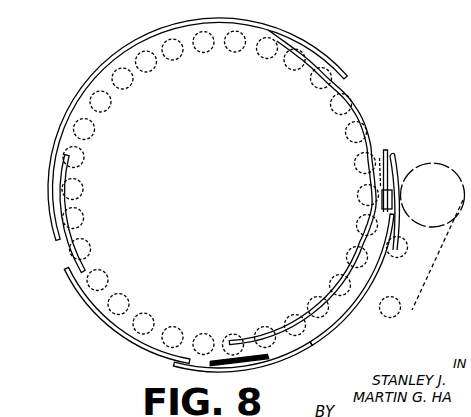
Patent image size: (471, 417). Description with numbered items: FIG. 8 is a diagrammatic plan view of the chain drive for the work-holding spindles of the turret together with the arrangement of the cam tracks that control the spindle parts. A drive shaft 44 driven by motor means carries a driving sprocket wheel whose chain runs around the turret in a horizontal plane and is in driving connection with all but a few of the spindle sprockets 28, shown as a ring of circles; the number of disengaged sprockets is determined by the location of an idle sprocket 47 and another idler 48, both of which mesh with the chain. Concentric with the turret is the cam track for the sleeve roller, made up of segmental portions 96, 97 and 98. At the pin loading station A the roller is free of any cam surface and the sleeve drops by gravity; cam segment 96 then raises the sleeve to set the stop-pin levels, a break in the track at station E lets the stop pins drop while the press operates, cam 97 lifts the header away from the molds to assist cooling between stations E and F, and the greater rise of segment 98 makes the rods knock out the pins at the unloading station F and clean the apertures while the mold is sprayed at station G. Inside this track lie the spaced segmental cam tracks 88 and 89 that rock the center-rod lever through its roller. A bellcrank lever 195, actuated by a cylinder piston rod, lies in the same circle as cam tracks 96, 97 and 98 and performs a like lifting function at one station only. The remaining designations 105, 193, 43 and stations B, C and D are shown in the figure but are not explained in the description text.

The cam segment 96 is at (108, 56).
The segmental cam track 88 is at (66, 243).
The cam segment 97 is at (157, 355).
The cam segment 98 is at (274, 364).
The right outer guide rail 105 is at (374, 338).
The segmental cam track 89 is at (349, 272).
The spindle sprockets 28 is at (340, 112).
The bellcrank lever 195 is at (385, 152).
The pivoted gate arm 193 is at (394, 182).
The feed wheel 43 is at (444, 225).
The drive shaft 44 is at (436, 262).
The idler 48 is at (423, 260).
The idle sprocket 47 is at (402, 299).
The ball B is at (355, 163).
The ball C is at (81, 190).
The ball D is at (80, 221).
The station E is at (84, 259).
The unloading station F is at (230, 336).
The spraying station G is at (260, 333).
The pin loading station A is at (289, 325).